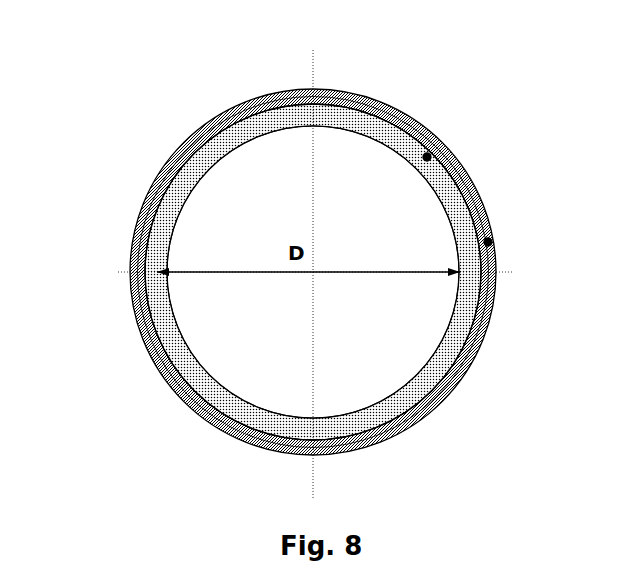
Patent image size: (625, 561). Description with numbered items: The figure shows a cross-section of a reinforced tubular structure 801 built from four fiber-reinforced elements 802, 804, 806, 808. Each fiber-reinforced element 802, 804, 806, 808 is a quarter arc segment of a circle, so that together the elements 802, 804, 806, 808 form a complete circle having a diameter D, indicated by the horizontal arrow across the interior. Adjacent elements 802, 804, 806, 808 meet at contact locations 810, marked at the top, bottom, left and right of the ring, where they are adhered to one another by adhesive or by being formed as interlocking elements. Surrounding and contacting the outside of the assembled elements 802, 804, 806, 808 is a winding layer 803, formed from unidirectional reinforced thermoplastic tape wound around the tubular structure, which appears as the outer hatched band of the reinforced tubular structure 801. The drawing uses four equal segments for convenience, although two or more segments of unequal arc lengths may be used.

The reinforced tubular structure 801 is at (393, 80).
The fiber-reinforced element 802 is at (427, 157).
The winding layer 803 is at (488, 242).
The fiber-reinforced element 804 is at (202, 155).
The fiber-reinforced element 806 is at (177, 358).
The fiber-reinforced element 808 is at (422, 395).
The contact locations 810 is at (312, 110).